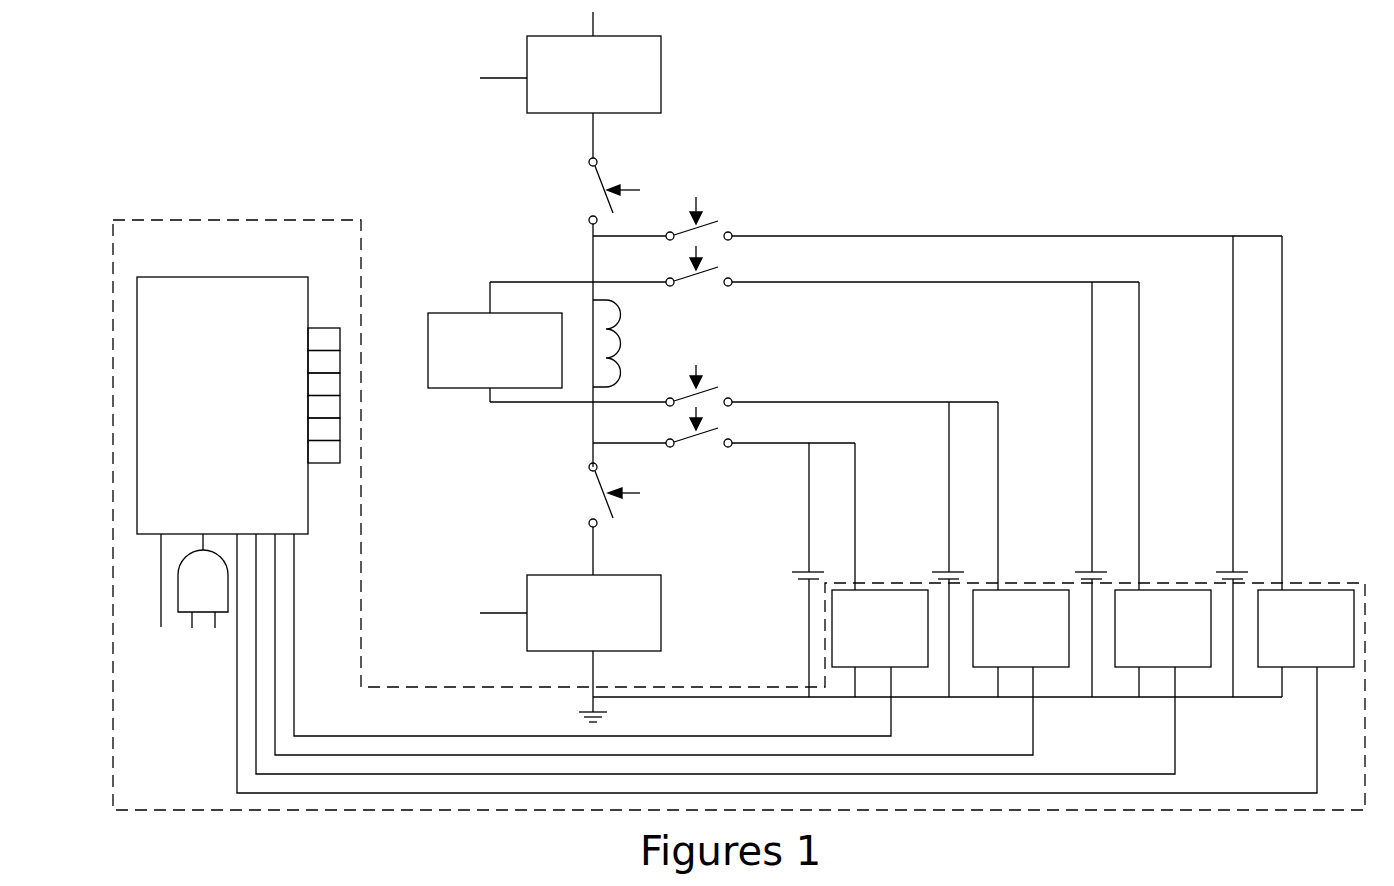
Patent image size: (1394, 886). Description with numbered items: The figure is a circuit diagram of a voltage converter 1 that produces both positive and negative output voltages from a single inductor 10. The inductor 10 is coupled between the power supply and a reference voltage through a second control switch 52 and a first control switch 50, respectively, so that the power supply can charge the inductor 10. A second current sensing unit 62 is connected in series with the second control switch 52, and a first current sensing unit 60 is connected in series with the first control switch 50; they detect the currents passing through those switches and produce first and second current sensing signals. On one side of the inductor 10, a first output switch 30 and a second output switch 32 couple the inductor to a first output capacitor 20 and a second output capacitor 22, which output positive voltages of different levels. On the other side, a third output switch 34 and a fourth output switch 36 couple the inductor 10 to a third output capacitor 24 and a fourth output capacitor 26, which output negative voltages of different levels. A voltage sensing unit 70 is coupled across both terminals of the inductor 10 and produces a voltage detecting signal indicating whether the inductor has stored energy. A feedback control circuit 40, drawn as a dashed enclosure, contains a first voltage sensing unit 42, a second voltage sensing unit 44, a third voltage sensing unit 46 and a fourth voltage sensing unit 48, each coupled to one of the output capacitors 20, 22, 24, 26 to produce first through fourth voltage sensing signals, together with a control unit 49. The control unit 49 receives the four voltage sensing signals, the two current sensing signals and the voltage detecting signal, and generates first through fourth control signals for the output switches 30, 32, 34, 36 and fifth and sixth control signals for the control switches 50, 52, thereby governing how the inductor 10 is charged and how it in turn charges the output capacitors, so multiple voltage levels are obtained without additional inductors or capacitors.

The voltage converter 1 is at (1288, 53).
The inductor 10 is at (623, 338).
The first output capacitor 20 is at (798, 570).
The second output capacitor 22 is at (938, 570).
The third output capacitor 24 is at (1081, 570).
The fourth output capacitor 26 is at (1223, 570).
The first output switch 30 is at (718, 429).
The second output switch 32 is at (718, 388).
The third output switch 34 is at (718, 268).
The fourth output switch 36 is at (718, 222).
The feedback control circuit 40 is at (1360, 583).
The first voltage sensing unit 42 is at (876, 590).
The second voltage sensing unit 44 is at (1017, 590).
The third voltage sensing unit 46 is at (1159, 590).
The fourth voltage sensing unit 48 is at (1302, 590).
The control unit 49 is at (262, 277).
The first control switch 50 is at (606, 494).
The second control switch 52 is at (605, 185).
The first current sensing unit 60 is at (661, 627).
The second current sensing unit 62 is at (661, 93).
The voltage sensing unit 70 is at (445, 313).